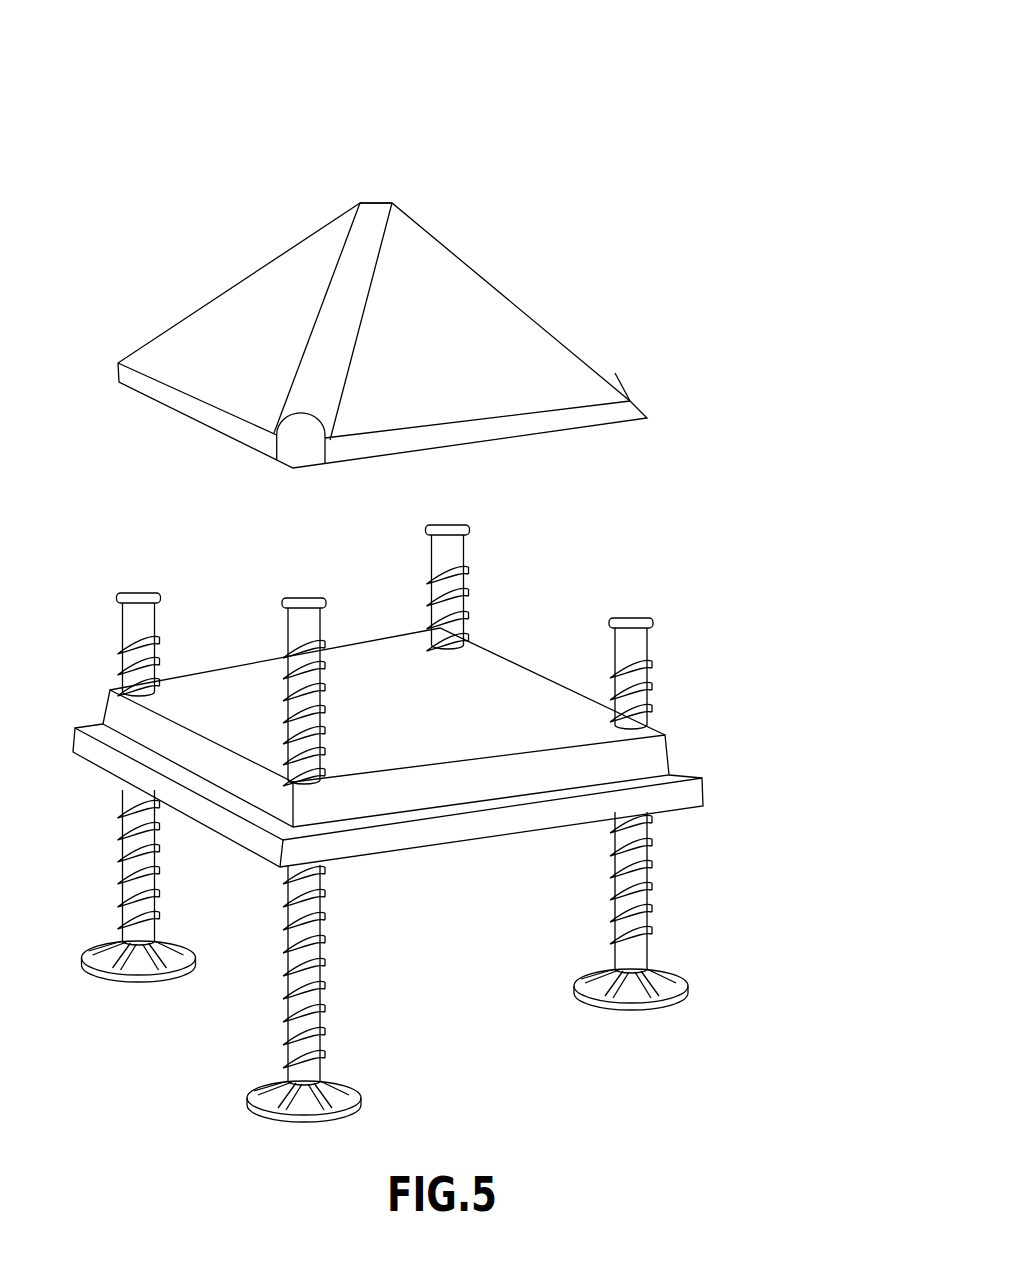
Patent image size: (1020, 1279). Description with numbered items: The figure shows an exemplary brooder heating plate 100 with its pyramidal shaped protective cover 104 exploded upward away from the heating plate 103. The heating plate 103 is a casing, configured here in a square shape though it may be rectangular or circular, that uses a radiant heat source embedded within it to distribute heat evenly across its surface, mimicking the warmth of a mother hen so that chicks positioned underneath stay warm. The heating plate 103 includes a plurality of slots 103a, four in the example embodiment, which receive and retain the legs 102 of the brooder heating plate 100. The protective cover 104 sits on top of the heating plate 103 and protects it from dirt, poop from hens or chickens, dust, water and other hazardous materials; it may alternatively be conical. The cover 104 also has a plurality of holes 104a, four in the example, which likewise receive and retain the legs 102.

The brooder heating plate 100 is at (613, 77).
The legs 102 is at (170, 625).
The heating plate 103 is at (415, 845).
The slots 103a is at (140, 696).
The protective cover 104 is at (382, 356).
The holes 104a is at (303, 428).